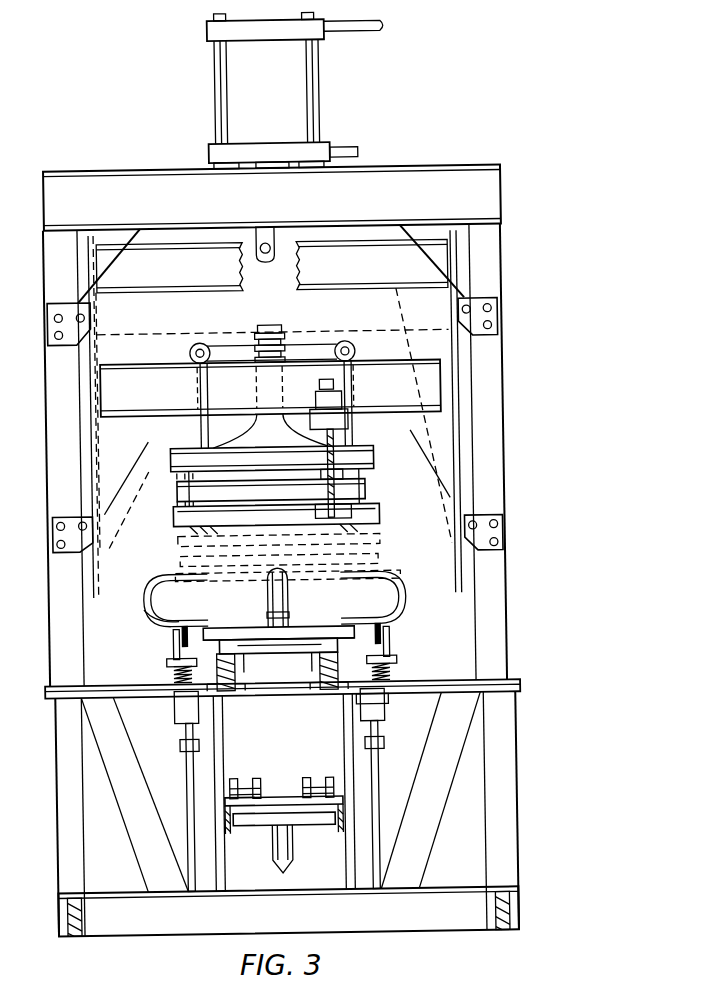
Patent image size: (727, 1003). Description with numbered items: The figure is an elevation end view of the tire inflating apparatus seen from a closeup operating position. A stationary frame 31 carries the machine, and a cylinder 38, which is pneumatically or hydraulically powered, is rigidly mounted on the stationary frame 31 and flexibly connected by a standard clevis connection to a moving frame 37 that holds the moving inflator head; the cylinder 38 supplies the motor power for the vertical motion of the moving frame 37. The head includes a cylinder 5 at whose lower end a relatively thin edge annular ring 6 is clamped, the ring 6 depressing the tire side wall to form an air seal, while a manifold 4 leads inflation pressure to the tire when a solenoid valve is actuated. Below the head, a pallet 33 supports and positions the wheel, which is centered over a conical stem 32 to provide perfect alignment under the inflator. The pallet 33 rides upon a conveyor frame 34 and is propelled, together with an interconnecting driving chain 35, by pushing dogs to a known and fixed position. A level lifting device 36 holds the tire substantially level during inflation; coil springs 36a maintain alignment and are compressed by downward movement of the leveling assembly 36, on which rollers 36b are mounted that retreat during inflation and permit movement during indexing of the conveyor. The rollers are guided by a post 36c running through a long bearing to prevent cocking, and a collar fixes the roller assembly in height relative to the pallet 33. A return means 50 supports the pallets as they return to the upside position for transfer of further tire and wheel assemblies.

The manifold 4 is at (321, 351).
The cylinder 5 is at (378, 491).
The annular ring 6 is at (261, 428).
The stationary frame 31 is at (497, 261).
The conical stem 32 is at (297, 585).
The pallet 33 is at (285, 636).
The conveyor frame 34 is at (362, 696).
The driving chain 35 is at (243, 673).
The level lifting device 36 is at (167, 640).
The coil springs 36a is at (172, 669).
The rollers 36b is at (177, 622).
The post 36c is at (185, 722).
The moving frame 37 is at (464, 408).
The cylinder 38 is at (340, 139).
The return means 50 is at (272, 656).